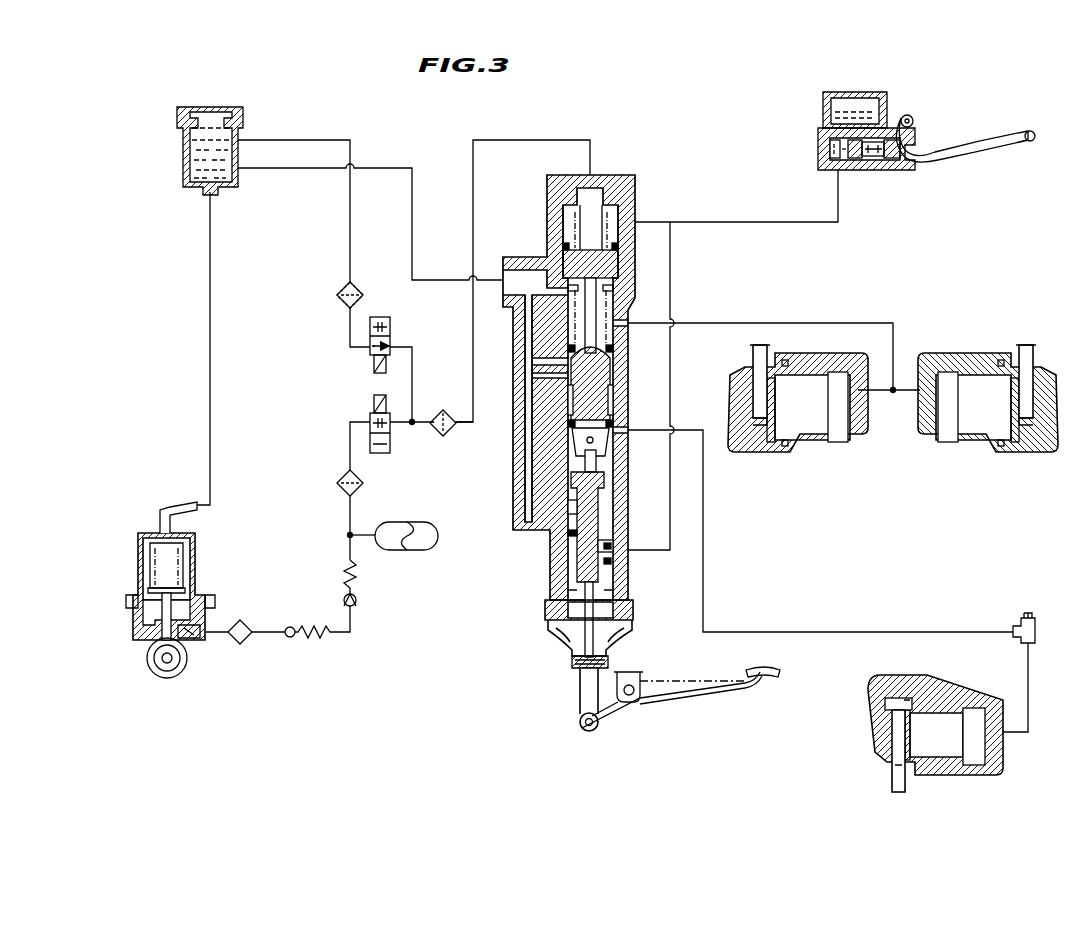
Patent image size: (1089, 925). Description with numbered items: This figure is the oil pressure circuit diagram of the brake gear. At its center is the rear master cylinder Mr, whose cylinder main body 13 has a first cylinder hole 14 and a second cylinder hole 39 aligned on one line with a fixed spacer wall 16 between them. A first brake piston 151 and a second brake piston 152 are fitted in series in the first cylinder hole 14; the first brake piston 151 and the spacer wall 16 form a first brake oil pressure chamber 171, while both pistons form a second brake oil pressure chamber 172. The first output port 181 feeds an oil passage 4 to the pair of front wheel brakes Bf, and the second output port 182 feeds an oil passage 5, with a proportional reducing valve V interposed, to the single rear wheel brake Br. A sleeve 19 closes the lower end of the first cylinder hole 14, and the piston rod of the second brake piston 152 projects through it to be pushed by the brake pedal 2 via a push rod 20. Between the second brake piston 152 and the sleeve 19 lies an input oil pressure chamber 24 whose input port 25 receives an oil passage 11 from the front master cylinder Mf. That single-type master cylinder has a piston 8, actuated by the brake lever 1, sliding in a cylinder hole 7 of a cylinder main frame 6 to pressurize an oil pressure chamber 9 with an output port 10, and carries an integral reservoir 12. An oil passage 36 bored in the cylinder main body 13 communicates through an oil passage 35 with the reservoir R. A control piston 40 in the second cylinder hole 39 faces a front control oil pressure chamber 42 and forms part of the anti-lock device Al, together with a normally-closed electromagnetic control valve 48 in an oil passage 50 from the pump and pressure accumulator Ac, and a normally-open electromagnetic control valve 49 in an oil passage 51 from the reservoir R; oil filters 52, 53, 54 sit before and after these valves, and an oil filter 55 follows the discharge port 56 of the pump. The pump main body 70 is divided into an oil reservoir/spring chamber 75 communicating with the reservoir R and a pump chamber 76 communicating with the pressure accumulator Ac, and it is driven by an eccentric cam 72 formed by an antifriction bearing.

The brake lever 1 is at (960, 131).
The brake pedal 2 is at (672, 686).
The oil passage 4 is at (784, 323).
The oil passage 5 is at (830, 632).
The cylinder main frame 6 is at (872, 168).
The cylinder hole 7 is at (850, 168).
The piston 8 is at (896, 160).
The oil pressure chamber 9 is at (820, 160).
The output port 10 is at (836, 168).
The oil passage 11 is at (740, 222).
The reservoir 12 is at (826, 122).
The cylinder main body 13 is at (627, 401).
The first cylinder hole 14 is at (610, 362).
The first brake piston 151 is at (600, 385).
The second brake piston 152 is at (594, 510).
The fixed spacer wall 16 is at (597, 283).
The first brake oil pressure chamber 171 is at (606, 318).
The second brake oil pressure chamber 172 is at (601, 462).
The first output port 181 is at (613, 344).
The second output port 182 is at (613, 424).
The sleeve 19 is at (596, 577).
The push rod 20 is at (583, 657).
The input oil pressure chamber 24 is at (571, 548).
The input port 25 is at (612, 548).
The oil passage 35 is at (382, 172).
The oil passage 36 is at (528, 340).
The second cylinder hole 39 is at (620, 224).
The control piston 40 is at (618, 262).
The front control oil pressure chamber 42 is at (566, 226).
The normally-closed electromagnetic control valve 48 is at (369, 420).
The normally-open electromagnetic control valve 49 is at (368, 358).
The oil passage 50 is at (348, 511).
The oil passage 51 is at (350, 244).
The oil filter 52 is at (341, 476).
The oil filter 53 is at (343, 303).
The oil filter 54 is at (449, 438).
The oil filter 55 is at (246, 624).
The discharge port 56 is at (208, 359).
The pump main body 70 is at (161, 605).
The eccentric cam 72 is at (161, 676).
The oil reservoir/spring chamber 75 is at (190, 561).
The pump chamber 76 is at (186, 650).
The pressure accumulator Ac is at (412, 551).
The anti-lock device Al is at (527, 140).
The front wheel brake Bf is at (835, 353).
The rear wheel brake Br is at (860, 723).
The front master cylinder Mf is at (899, 144).
The rear master cylinder Mr is at (593, 453).
The reservoir R is at (183, 153).
The proportional reducing valve V is at (1036, 627).